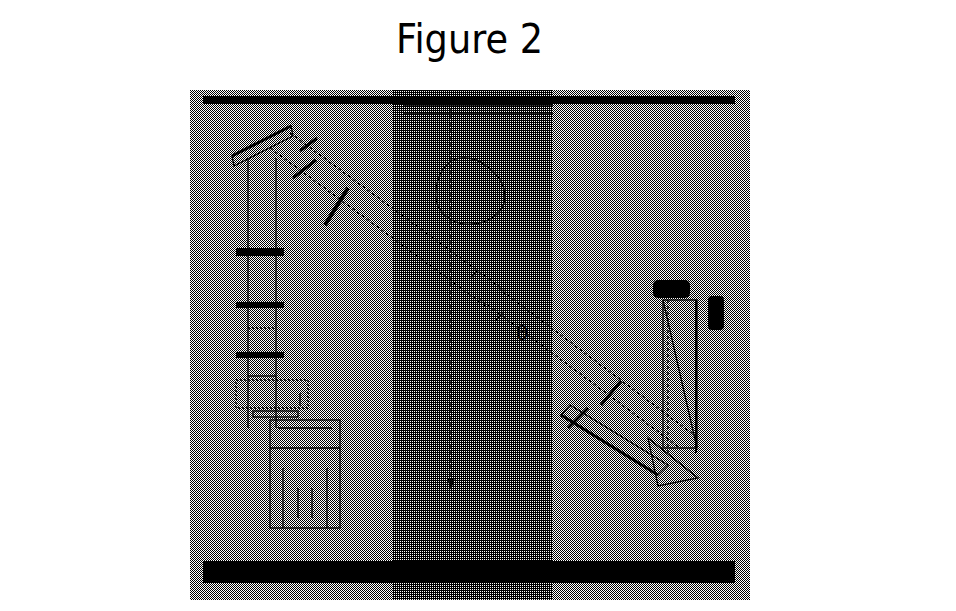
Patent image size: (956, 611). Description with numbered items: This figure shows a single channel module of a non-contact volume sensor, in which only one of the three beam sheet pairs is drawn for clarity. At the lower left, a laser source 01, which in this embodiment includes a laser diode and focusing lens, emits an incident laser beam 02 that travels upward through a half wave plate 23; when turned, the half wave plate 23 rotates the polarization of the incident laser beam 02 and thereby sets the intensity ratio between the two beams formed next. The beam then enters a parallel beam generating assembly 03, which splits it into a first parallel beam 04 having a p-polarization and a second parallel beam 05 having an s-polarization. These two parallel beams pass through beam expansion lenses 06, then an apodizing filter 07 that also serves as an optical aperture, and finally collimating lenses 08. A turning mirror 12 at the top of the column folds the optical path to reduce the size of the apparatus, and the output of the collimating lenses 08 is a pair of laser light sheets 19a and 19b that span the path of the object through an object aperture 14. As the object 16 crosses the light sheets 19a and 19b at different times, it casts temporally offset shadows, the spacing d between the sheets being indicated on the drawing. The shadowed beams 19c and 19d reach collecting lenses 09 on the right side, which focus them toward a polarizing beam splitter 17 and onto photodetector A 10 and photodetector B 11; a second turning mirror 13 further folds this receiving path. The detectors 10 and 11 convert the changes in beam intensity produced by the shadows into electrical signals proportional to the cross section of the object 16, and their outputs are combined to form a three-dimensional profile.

The mirror 12 is at (224, 137).
The beam-collimating lenses 08 is at (290, 186).
The apodizing filter/optical aperture 07 is at (230, 242).
The beam expansion lenses 06 is at (228, 322).
The beam-generator assembly 03 is at (242, 372).
The half wave plate 23 is at (250, 405).
The source 01 is at (255, 440).
The object aperture 14 is at (478, 120).
The object 16 is at (497, 172).
The beam sheet 19a is at (465, 270).
The beam sheet 19b is at (490, 312).
The shadowed beam 19c is at (692, 363).
The shadowed beam 19d is at (656, 352).
The distance d is at (433, 272).
The parallel beam 05 is at (270, 320).
The parallel beam 04 is at (238, 368).
The beam 02 is at (293, 390).
The detector 10 is at (682, 270).
The detector 11 is at (718, 300).
The polarizing beam splitter 17 is at (702, 332).
The collecting lenses 09 is at (636, 390).
The mirror 13 is at (682, 450).